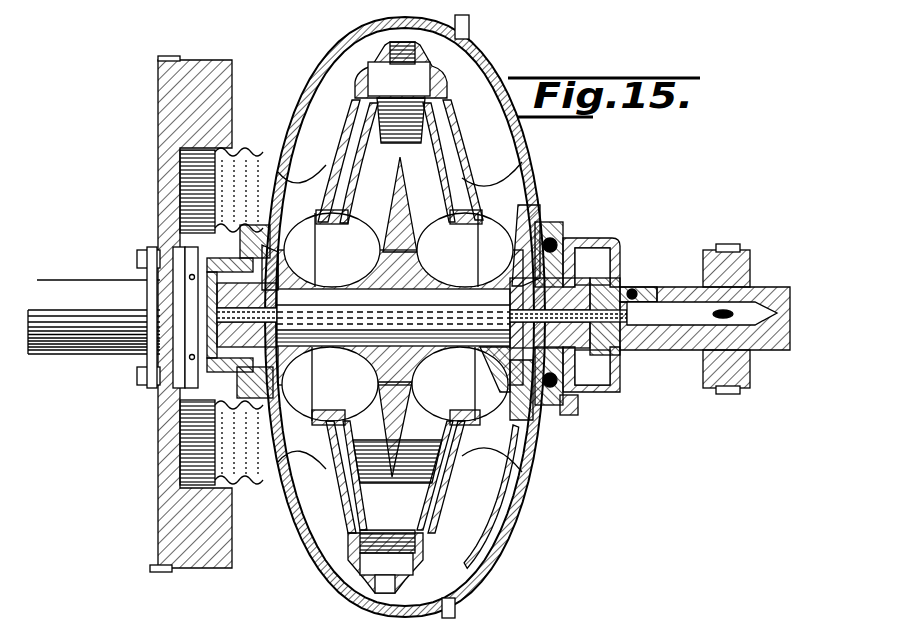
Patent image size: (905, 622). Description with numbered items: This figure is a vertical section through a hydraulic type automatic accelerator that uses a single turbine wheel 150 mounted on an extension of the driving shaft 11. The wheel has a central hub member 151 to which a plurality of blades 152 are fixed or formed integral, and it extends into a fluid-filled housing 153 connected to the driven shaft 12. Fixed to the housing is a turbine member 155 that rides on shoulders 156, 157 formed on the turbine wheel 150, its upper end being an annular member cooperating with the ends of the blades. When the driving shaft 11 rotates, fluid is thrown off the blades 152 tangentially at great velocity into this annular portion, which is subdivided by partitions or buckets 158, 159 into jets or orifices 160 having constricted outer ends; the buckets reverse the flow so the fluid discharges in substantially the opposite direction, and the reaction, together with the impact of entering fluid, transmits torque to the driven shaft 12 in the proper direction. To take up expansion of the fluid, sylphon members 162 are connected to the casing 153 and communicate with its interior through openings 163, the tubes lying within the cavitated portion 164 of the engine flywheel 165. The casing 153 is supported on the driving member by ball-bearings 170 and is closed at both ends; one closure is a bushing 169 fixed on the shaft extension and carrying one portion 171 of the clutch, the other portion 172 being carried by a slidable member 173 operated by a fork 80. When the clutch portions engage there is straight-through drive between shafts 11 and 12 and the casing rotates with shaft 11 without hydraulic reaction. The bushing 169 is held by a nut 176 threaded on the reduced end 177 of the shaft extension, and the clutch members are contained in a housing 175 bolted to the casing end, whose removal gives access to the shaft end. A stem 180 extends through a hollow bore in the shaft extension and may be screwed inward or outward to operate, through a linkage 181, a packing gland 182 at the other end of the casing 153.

The driving shaft 11 is at (94, 317).
The driven shaft 12 is at (778, 353).
The fork 80 is at (748, 253).
The turbine wheel 150 is at (423, 270).
The central hub member 151 is at (412, 373).
The blades 152 is at (357, 230).
The housing 153 is at (332, 58).
The turbine member 155 is at (340, 490).
The shoulder 156 is at (480, 213).
The shoulder 157 is at (443, 98).
The partition 158 is at (415, 78).
The partition 159 is at (397, 563).
The jets 160 is at (398, 36).
The sylphon members 162 is at (277, 147).
The openings 163 is at (280, 177).
The cavitated portion 164 is at (208, 400).
The engine flywheel 165 is at (160, 110).
The bushing 169 is at (492, 355).
The ball-bearings 170 is at (282, 260).
The clutch member portion 171 is at (590, 247).
The clutch member portion 172 is at (590, 400).
The slidable member 173 is at (667, 353).
The clutch housing 175 is at (617, 413).
The nut 176 is at (622, 375).
The reduced end 177 is at (620, 267).
The stem 180 is at (647, 287).
The linkage 181 is at (193, 297).
The packing gland 182 is at (207, 263).